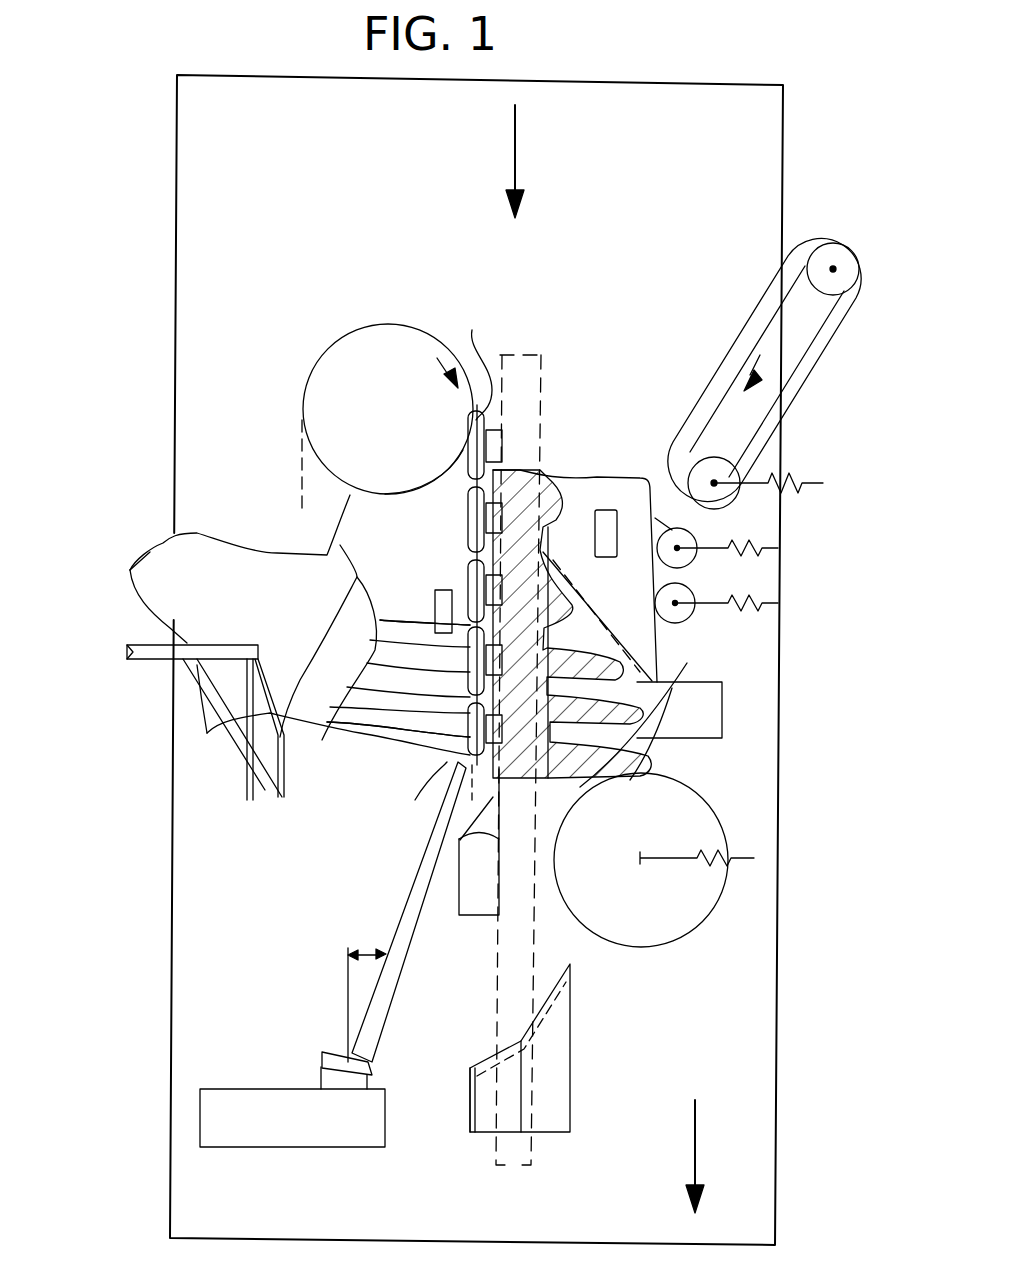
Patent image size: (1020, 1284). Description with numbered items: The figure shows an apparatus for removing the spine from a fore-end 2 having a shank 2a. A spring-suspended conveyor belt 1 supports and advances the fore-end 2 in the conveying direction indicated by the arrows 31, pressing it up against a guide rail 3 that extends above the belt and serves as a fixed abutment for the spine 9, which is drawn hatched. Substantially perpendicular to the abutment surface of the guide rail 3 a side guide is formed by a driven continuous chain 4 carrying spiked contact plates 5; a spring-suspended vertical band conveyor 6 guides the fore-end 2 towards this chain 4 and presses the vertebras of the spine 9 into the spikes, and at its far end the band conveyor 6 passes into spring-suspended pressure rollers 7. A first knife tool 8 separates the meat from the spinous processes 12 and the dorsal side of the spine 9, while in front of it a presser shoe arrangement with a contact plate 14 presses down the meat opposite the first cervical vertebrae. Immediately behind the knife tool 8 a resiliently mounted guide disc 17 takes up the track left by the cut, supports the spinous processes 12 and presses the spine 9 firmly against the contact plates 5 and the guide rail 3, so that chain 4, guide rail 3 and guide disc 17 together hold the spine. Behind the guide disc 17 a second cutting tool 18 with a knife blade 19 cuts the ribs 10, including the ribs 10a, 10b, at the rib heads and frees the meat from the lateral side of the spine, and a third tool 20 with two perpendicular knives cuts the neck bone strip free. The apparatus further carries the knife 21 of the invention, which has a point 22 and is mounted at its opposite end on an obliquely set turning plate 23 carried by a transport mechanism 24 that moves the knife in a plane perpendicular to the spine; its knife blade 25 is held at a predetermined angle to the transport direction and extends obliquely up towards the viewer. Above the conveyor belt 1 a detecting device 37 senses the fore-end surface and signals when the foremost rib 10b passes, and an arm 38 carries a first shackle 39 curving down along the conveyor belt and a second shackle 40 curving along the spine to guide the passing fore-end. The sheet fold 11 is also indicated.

The conveyor belt 1 is at (190, 177).
The fore-end 2 is at (118, 608).
The shank 2a is at (163, 566).
The guide rail 3 is at (519, 1168).
The driven continuous chain 4 is at (457, 732).
The contact plates 5 is at (397, 398).
The band conveyor 6 is at (832, 253).
The pressure rollers 7 is at (660, 605).
The first knife tool 8 is at (703, 727).
The spine 9 is at (560, 507).
The ribs 10 is at (342, 728).
The rib 10a is at (380, 722).
The foremost rib 10b is at (397, 620).
The sheet fold 11 is at (327, 640).
The spinous processes 12 is at (690, 672).
The contact plate 14 is at (607, 525).
The guide disc 17 is at (688, 905).
The second cutting tool 18 is at (478, 1085).
The knife blade 19 is at (560, 1062).
The third tool 20 is at (472, 905).
The knife 21 is at (330, 985).
The point 22 is at (413, 789).
The turning plate 23 is at (330, 1050).
The transport mechanism 24 is at (247, 1130).
The knife blade 25 is at (385, 1005).
The arrows 31 is at (517, 140).
The detecting device 37 is at (441, 590).
The arm 38 is at (127, 659).
The first shackle 39 is at (247, 783).
The second shackle 40 is at (247, 715).